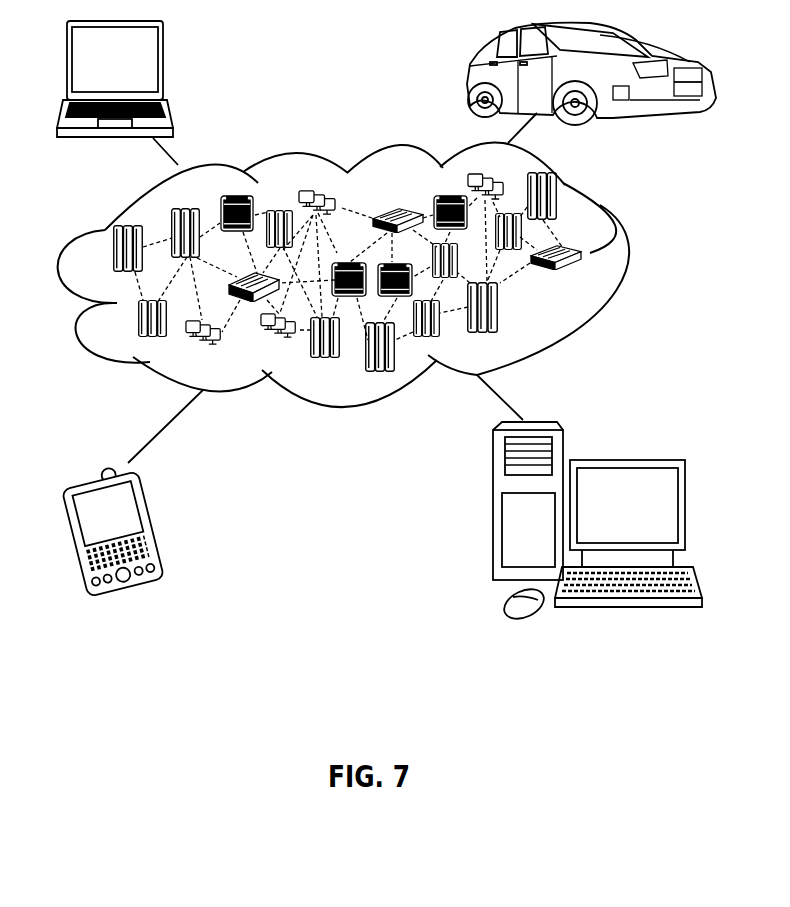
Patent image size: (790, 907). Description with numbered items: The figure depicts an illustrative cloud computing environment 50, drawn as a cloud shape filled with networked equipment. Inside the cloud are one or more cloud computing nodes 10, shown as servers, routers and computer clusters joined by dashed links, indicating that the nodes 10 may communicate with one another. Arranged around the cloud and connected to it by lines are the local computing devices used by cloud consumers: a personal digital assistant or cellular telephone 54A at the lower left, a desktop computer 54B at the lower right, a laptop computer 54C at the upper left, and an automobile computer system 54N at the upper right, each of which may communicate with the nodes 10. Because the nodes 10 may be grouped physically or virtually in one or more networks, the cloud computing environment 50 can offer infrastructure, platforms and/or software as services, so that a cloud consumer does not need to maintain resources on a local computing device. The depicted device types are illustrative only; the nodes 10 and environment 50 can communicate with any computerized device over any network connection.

The cloud computing nodes 10 is at (585, 280).
The cloud computing environment 50 is at (628, 257).
The personal digital assistant or cellular telephone 54A is at (157, 525).
The desktop computer 54B is at (623, 460).
The laptop computer 54C is at (163, 63).
The automobile computer system 54N is at (470, 70).